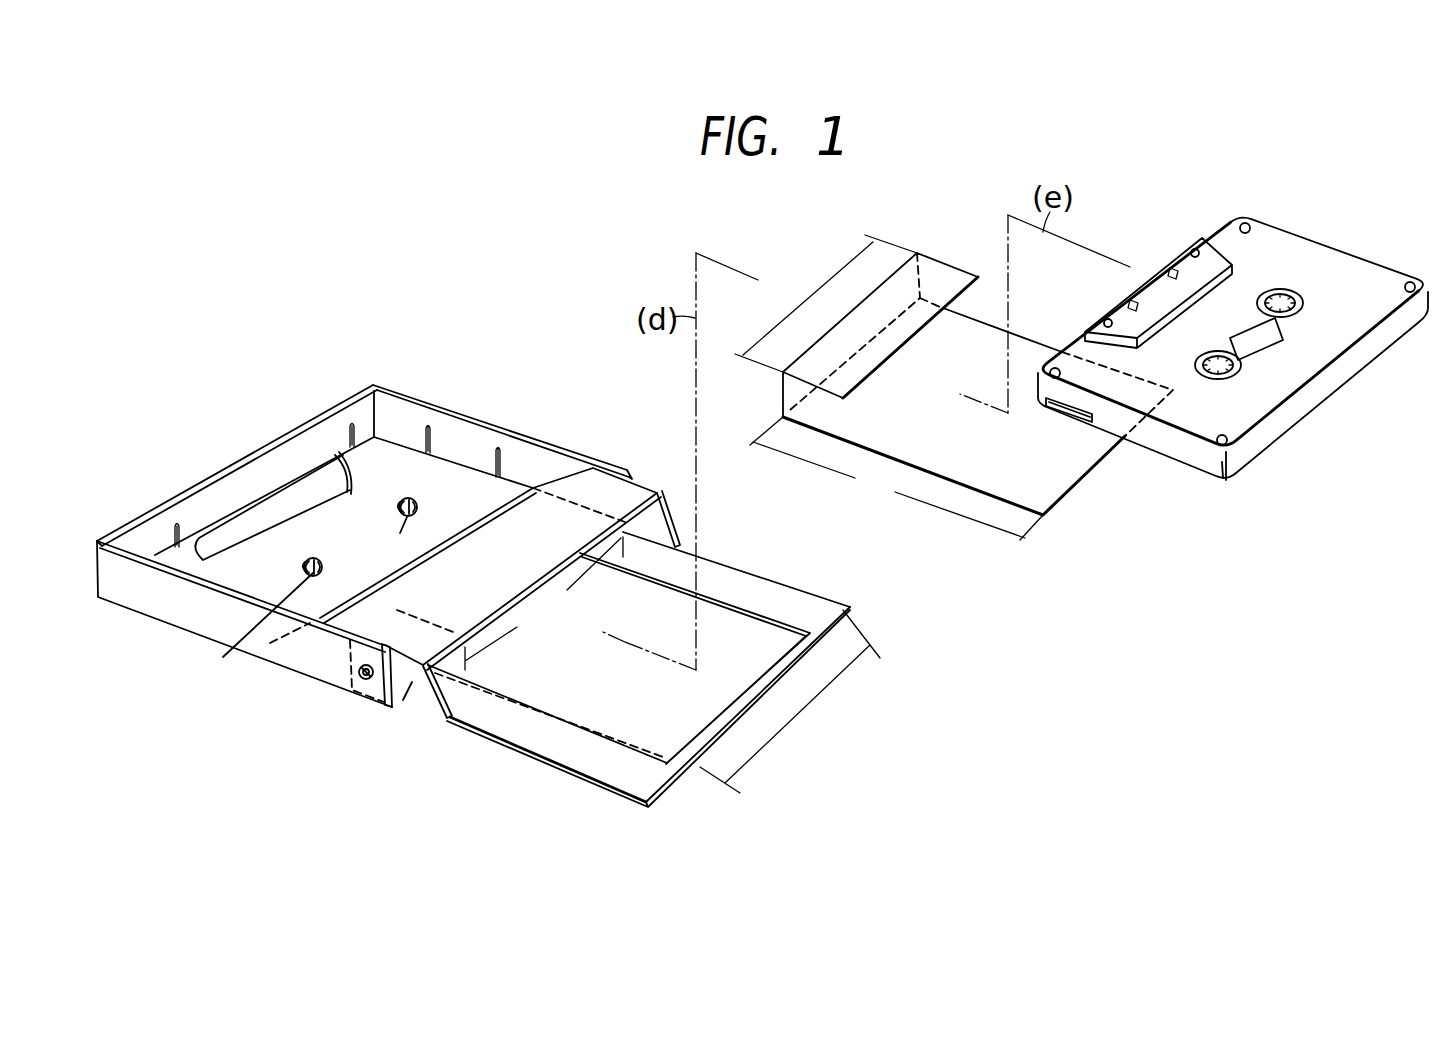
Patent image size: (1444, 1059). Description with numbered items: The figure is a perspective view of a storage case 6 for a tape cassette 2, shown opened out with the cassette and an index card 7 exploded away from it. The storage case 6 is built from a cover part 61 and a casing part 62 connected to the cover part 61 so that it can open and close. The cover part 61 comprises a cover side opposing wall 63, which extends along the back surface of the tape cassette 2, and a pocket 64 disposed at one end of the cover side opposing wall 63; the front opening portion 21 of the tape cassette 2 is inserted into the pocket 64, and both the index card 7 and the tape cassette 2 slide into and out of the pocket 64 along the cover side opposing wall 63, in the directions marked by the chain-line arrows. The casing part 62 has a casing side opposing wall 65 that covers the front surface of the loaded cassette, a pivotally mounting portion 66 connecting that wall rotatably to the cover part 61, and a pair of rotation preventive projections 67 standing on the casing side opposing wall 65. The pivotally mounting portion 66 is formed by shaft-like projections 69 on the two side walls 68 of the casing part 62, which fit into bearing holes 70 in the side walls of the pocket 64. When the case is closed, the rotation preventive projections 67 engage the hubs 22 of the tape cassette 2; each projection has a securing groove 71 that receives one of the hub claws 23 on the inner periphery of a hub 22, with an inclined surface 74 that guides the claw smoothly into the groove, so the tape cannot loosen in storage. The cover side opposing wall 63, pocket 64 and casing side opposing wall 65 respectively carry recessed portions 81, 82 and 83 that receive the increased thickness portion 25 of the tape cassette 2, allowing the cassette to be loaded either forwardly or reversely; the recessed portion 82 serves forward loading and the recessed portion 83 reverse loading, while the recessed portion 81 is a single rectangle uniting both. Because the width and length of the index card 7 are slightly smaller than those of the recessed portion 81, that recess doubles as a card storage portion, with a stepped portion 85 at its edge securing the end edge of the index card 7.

The tape cassette 2 is at (1233, 317).
The storage case 6 is at (380, 537).
The index card 7 is at (1097, 453).
The front opening portion 21 is at (1117, 305).
The hubs 22 is at (1287, 318).
The hub claws 23 is at (1277, 293).
The increased thickness portion 25 is at (1183, 257).
The cover part 61 is at (607, 618).
The casing part 62 is at (240, 461).
The cover side opposing wall 63 is at (532, 740).
The pocket 64 is at (648, 523).
The casing side opposing wall 65 is at (395, 448).
The pivotally mounting portion 66 is at (407, 693).
The rotation preventive projections 67 is at (423, 503).
The side walls 68 is at (560, 457).
The shaft-like projections 69 is at (363, 680).
The bearing holes 70 is at (385, 648).
The securing groove 71 is at (403, 492).
The inclined surface 74 is at (306, 602).
The recessed portion 81 is at (737, 622).
The recessed portion 82 is at (545, 587).
The recessed portion 83 is at (336, 457).
The stepped portion 85 is at (823, 648).